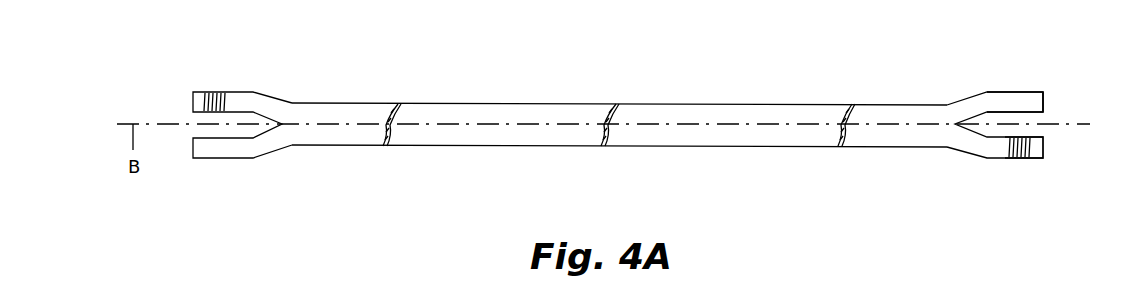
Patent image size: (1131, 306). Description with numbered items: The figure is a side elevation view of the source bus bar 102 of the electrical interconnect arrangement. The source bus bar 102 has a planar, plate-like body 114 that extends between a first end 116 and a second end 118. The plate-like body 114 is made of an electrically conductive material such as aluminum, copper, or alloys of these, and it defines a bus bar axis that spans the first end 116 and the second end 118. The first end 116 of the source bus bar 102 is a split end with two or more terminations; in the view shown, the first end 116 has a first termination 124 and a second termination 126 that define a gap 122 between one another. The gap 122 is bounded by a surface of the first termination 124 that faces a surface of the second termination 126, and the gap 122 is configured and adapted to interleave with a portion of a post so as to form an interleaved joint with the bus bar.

The source bus bar 102 is at (778, 76).
The plate-like body 114 is at (563, 138).
The first end 116 is at (262, 170).
The second end 118 is at (945, 162).
The gap 122 is at (1048, 110).
The first termination 124 is at (1020, 100).
The second termination 126 is at (1031, 152).